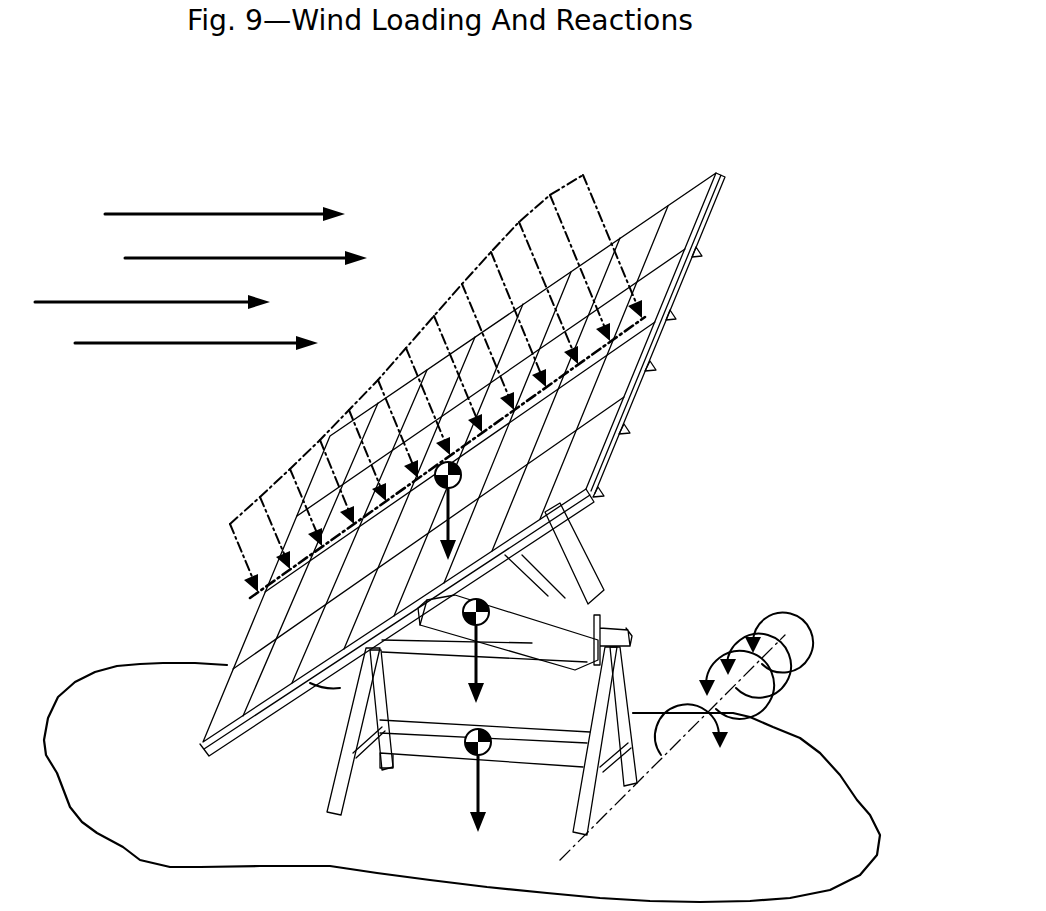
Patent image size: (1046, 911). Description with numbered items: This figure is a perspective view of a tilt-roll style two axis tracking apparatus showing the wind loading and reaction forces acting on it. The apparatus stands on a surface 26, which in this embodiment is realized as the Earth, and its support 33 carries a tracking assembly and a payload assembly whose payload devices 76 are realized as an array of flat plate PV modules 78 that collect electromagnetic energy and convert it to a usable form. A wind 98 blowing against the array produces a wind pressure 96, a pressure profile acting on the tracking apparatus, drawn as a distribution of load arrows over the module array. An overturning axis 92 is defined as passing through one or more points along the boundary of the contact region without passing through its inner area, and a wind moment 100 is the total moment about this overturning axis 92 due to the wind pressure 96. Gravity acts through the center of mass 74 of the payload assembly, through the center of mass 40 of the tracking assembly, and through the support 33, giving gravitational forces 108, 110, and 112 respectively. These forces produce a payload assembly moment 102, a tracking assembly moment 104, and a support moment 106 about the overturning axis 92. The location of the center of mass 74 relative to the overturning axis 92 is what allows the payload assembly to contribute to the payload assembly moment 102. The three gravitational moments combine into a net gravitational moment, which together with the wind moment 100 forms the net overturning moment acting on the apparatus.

The wind 98 is at (224, 212).
The wind pressure 96 is at (530, 225).
The center of mass 74 is at (462, 478).
The gravitational force 108 is at (522, 518).
The center of mass 40 is at (500, 585).
The payload devices 76 is at (265, 627).
The flat plate PV modules 78 is at (275, 668).
The gravitational force 110 is at (483, 668).
The stand 33 is at (467, 754).
The gravitational force 112 is at (473, 797).
The surface 26 is at (137, 838).
The support moment 106 is at (813, 652).
The tracking assembly moment 104 is at (793, 680).
The payload assembly moment 102 is at (752, 710).
The wind moment 100 is at (712, 762).
The overturning axis 92 is at (627, 807).